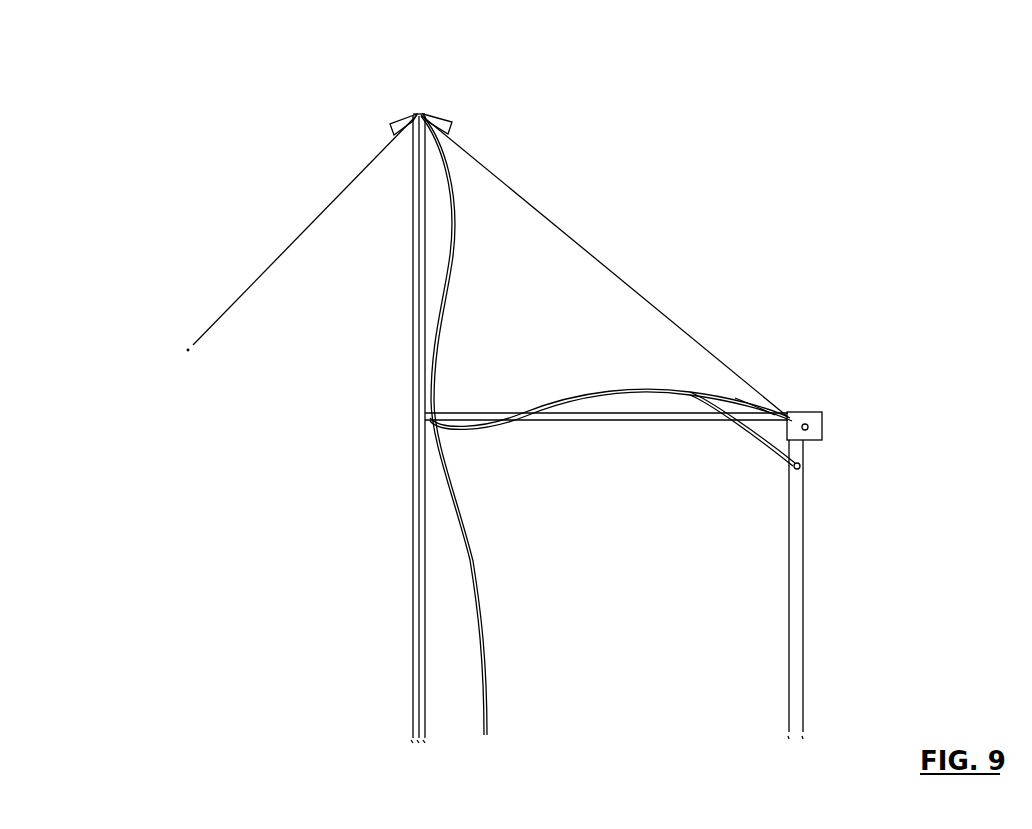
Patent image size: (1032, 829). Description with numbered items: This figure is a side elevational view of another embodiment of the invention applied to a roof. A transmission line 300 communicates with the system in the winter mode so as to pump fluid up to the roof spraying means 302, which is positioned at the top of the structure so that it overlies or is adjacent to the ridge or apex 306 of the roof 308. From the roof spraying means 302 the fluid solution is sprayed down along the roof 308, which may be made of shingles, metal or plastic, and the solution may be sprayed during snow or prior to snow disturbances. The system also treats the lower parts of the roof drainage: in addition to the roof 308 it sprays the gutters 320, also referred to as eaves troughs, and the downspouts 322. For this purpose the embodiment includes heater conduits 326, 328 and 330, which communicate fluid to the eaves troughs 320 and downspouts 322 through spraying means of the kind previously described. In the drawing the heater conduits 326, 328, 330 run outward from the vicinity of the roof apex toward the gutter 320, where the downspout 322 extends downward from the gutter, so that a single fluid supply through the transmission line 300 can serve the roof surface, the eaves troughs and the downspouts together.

The transmission line 300 is at (476, 581).
The roof spraying means 302 is at (425, 113).
The ridge or apex 306 is at (418, 113).
The roof 308 is at (507, 185).
The gutters 320 is at (808, 412).
The downspouts 322 is at (797, 590).
The heater conduit 326 is at (617, 392).
The heater conduit 328 is at (741, 398).
The heater conduit 330 is at (752, 435).